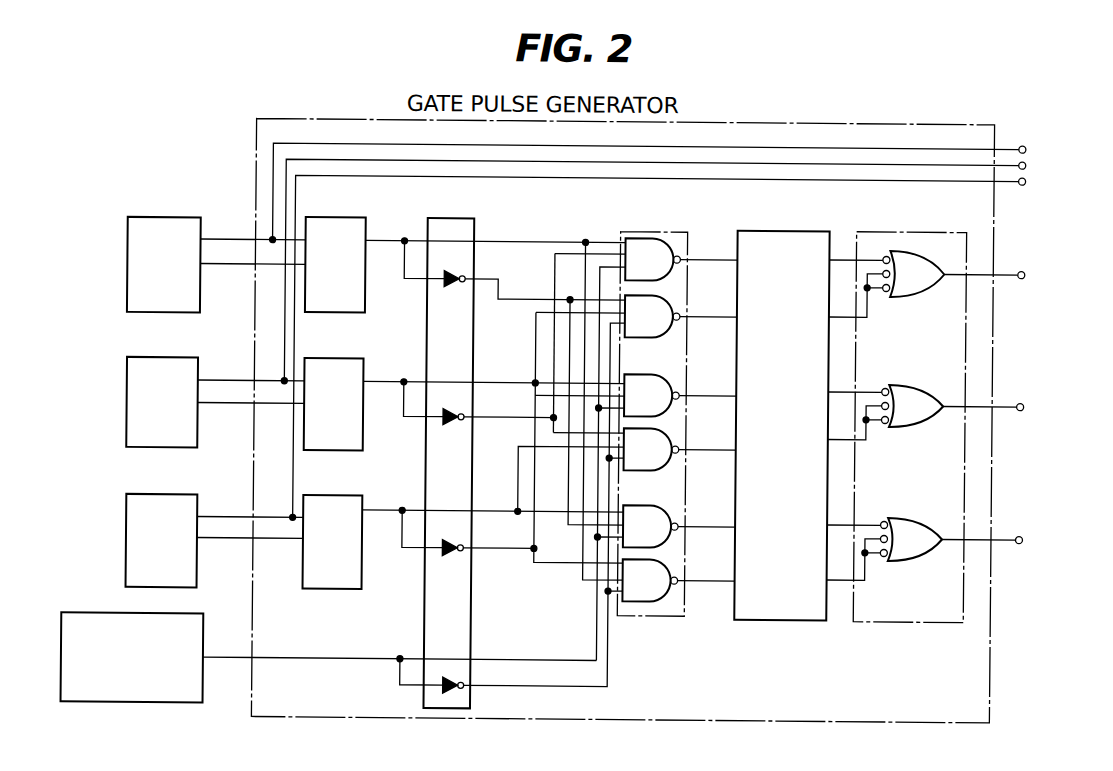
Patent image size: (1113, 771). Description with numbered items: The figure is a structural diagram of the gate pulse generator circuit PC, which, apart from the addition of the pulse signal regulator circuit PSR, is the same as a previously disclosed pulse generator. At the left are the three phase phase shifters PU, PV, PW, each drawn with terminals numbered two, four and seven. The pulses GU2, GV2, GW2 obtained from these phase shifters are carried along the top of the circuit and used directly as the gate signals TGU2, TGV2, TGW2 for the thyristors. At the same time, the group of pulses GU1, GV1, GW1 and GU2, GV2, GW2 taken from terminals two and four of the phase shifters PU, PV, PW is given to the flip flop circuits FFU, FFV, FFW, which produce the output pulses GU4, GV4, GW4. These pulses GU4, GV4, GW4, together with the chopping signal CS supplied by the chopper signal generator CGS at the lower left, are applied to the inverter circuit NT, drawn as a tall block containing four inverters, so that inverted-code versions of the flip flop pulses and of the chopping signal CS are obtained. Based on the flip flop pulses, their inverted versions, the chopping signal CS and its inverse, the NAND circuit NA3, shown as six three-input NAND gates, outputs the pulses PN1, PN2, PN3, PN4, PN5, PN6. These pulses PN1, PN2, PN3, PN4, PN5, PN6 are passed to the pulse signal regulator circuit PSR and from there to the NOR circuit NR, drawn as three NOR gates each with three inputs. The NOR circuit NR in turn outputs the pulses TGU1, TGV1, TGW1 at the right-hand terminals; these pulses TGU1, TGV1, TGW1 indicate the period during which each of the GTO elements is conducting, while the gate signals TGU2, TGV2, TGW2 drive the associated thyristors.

The pulse generator circuit PC is at (254, 136).
The three phase phase shifter (U phase) PU is at (160, 241).
The three phase phase shifter (V phase) PV is at (162, 402).
The three phase phase shifter (W phase) PW is at (162, 541).
The flip flop circuit (U phase) FFU is at (335, 265).
The flip flop circuit (V phase) FFV is at (334, 404).
The flip flop circuit (W phase) FFW is at (333, 542).
The chopper signal generator CGS is at (111, 617).
The inverter circuit NT is at (442, 219).
The NAND circuit NA3 is at (647, 231).
The pulse signal regulator circuit PSR is at (778, 229).
The NOR circuit NR is at (881, 229).
The NAND output pulse PN1 is at (700, 258).
The NAND output pulse PN2 is at (700, 315).
The NAND output pulse PN3 is at (700, 394).
The NAND output pulse PN4 is at (700, 448).
The NAND output pulse PN5 is at (700, 525).
The NAND output pulse PN6 is at (700, 579).
The phase shifter pulse GU1 is at (252, 279).
The phase shifter pulse GU2 is at (253, 227).
The phase shifter pulse GV1 is at (250, 419).
The phase shifter pulse GV2 is at (251, 370).
The phase shifter pulse GW1 is at (250, 553).
The phase shifter pulse GW2 is at (250, 505).
The flip flop output pulse GU4 is at (530, 251).
The flip flop output pulse GV4 is at (515, 393).
The flip flop output pulse GW4 is at (404, 487).
The chopping signal CS is at (222, 659).
The gate pulse TGU1 is at (1024, 270).
The gate pulse TGV1 is at (1024, 404).
The gate pulse TGW1 is at (1023, 539).
The gate signal TGU2 is at (1023, 143).
The gate signal TGV2 is at (1024, 162).
The gate signal TGW2 is at (1023, 181).